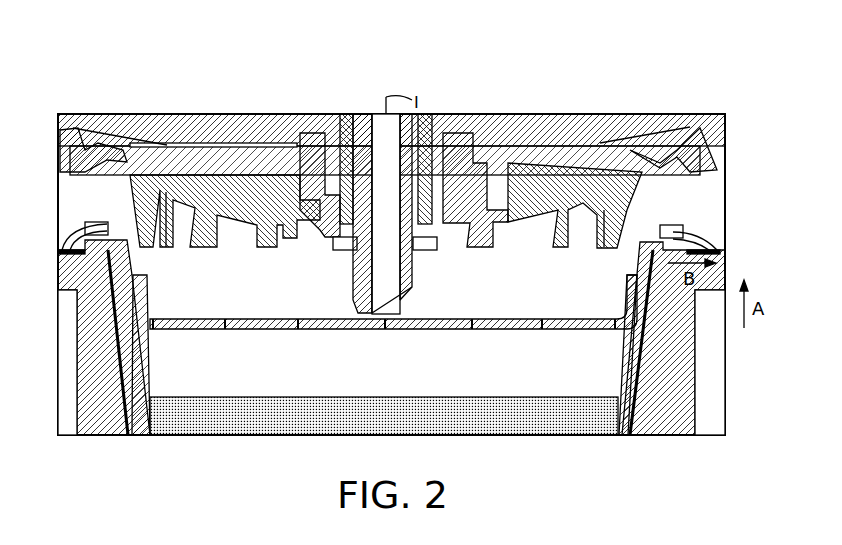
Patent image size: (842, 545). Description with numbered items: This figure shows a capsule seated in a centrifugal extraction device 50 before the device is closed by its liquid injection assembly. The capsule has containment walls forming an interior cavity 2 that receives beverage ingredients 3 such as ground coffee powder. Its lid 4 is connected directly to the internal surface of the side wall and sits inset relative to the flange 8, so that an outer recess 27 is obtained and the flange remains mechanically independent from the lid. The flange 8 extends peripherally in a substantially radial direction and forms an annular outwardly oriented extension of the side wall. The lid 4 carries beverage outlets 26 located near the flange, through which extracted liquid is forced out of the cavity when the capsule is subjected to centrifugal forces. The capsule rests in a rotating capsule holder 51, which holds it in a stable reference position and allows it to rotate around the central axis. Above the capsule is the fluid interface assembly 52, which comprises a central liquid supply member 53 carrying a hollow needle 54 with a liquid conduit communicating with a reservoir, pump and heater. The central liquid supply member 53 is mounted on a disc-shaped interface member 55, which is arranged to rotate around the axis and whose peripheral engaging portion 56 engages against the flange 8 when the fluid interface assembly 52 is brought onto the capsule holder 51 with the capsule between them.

The centrifugal extraction device 50 is at (289, 86).
The interface member 55 is at (725, 82).
The central liquid supply member 53 is at (428, 82).
The hollow needle 54 is at (407, 268).
The peripheral engaging portion 56 is at (712, 158).
The fluid interface assembly 52 is at (772, 116).
The flange 8 is at (108, 220).
The outer recess 27 is at (172, 300).
The lid 4 is at (584, 332).
The beverage outlets 26 is at (223, 330).
The interior cavity 2 is at (527, 372).
The beverage ingredients 3 is at (578, 425).
The rotating capsule holder 51 is at (690, 438).